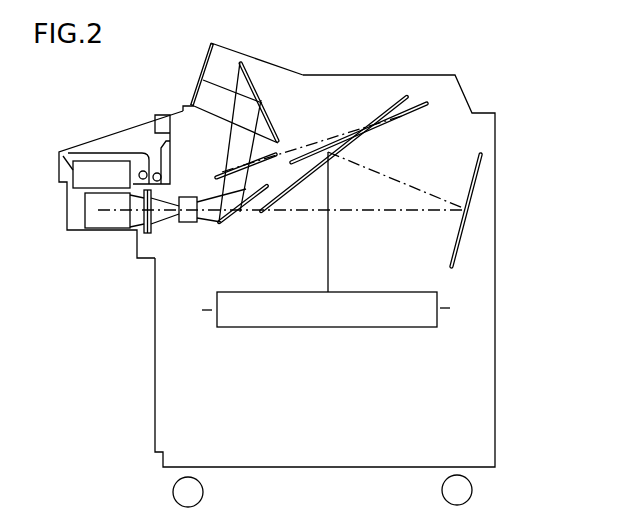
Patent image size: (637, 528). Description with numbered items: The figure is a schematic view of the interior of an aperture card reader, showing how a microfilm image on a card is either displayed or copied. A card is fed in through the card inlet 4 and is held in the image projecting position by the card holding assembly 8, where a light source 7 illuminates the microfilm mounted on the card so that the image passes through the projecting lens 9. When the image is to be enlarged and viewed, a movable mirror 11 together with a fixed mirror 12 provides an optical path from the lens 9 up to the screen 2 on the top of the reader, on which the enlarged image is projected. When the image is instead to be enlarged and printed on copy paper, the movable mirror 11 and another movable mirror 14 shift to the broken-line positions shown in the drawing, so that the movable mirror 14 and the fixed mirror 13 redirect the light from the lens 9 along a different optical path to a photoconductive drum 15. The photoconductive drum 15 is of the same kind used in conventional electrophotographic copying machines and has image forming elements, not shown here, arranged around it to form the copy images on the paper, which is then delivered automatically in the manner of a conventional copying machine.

The screen 2 is at (208, 50).
The card inlet 4 is at (133, 137).
The light source 7 is at (100, 212).
The card holding assembly 8 is at (154, 231).
The projecting lens 9 is at (188, 218).
The movable mirror 11 is at (238, 213).
The fixed mirror 12 is at (264, 107).
The fixed mirror 13 is at (477, 177).
The movable mirror 14 is at (398, 97).
The photoconductive drum 15 is at (410, 322).